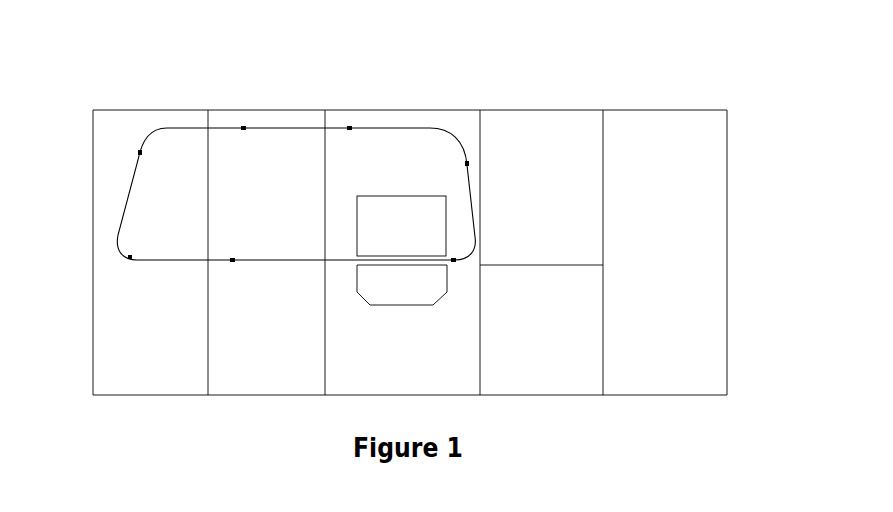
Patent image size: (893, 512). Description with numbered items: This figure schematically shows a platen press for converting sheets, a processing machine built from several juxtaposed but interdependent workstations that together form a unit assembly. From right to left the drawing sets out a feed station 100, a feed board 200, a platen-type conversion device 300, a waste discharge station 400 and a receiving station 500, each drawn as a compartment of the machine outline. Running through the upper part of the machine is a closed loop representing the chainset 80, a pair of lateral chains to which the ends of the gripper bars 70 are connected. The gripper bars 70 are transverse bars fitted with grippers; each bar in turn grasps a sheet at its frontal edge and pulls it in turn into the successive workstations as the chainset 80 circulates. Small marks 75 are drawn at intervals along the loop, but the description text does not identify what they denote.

The feed station 100 is at (660, 103).
The feed board 200 is at (515, 253).
The platen-type conversion device 300 is at (392, 102).
The waste discharge station 400 is at (257, 100).
The receiving station 500 is at (152, 100).
The gripper bars 70 is at (132, 110).
The loop stations 75 is at (133, 158).
The chainset 80 is at (283, 265).